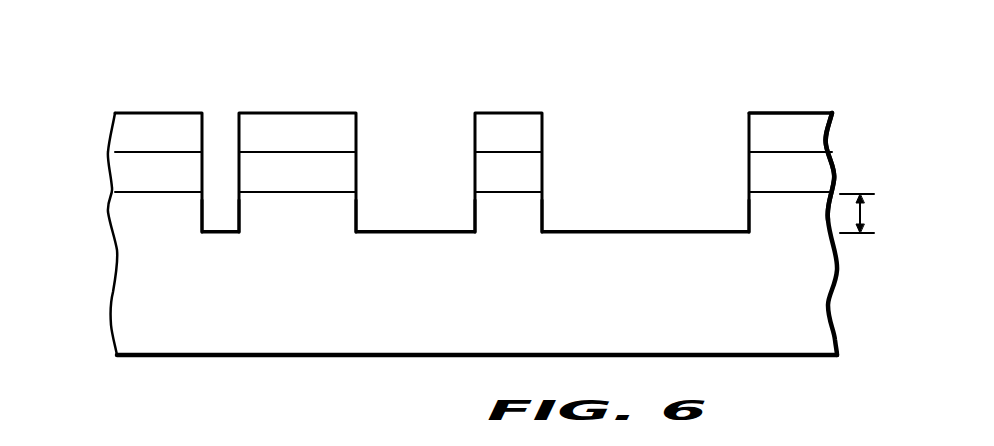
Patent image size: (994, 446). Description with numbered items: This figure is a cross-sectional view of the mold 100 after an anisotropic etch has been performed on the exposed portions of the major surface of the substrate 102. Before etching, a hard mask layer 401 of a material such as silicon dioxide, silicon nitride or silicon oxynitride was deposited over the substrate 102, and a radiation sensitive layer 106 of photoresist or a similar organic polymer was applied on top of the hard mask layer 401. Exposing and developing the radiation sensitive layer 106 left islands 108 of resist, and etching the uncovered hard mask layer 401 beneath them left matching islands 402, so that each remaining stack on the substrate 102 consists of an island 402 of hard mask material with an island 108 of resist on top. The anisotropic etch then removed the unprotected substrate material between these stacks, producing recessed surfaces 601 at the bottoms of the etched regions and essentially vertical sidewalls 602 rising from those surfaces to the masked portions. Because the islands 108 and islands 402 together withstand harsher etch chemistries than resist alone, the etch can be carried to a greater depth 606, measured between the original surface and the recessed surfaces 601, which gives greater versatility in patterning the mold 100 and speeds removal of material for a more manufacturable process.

The mold 100 is at (501, 267).
The substrate 102 is at (832, 306).
The radiation sensitive layer 106 is at (882, 105).
The islands 108 is at (116, 129).
The hard mask layer 401 is at (877, 158).
The islands 402 is at (117, 167).
The surfaces 601 is at (221, 235).
The sidewalls 602 is at (202, 215).
The depth 606 is at (869, 217).